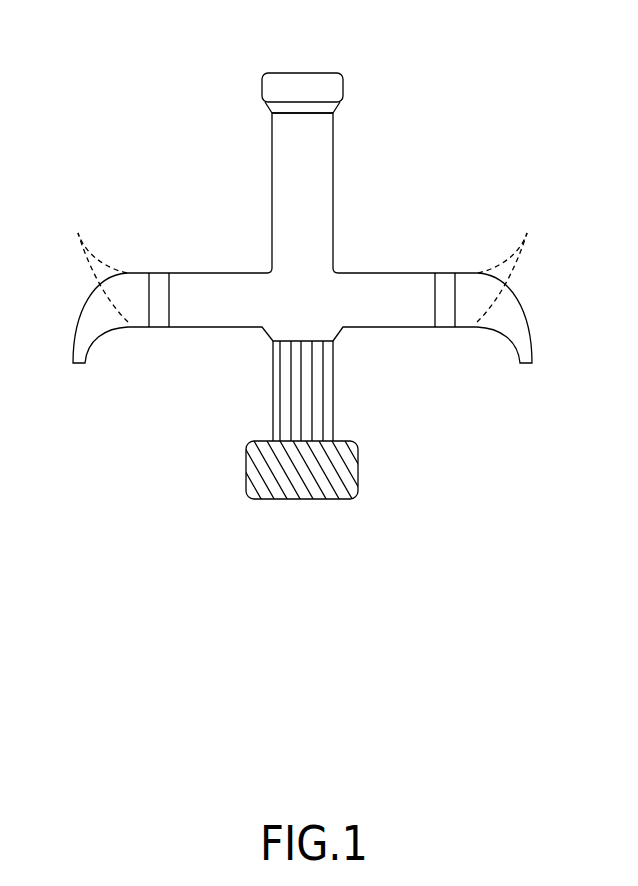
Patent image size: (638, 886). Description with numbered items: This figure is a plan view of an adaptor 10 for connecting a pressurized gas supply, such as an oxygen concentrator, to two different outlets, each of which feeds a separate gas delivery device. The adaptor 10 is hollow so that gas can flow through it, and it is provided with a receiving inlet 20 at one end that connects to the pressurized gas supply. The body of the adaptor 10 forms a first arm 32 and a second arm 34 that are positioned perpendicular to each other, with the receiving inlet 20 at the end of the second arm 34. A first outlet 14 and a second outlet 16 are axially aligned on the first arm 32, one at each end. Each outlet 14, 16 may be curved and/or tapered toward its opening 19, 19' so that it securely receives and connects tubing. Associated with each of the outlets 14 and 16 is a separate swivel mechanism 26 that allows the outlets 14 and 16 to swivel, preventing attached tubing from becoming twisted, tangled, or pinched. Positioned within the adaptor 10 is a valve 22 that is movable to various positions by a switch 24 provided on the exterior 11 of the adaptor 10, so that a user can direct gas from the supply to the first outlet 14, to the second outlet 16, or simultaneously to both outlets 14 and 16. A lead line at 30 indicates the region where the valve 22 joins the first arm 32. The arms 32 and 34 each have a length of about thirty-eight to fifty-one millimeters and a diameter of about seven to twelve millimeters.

The adaptor 10 is at (492, 122).
The exterior 11 is at (272, 197).
The first outlet 14 is at (87, 365).
The second outlet 16 is at (530, 325).
The opening 19 is at (56, 384).
The opening 19' is at (538, 389).
The receiving inlet 20 is at (330, 88).
The valve 22 is at (315, 341).
The switch 24 is at (343, 468).
The swivel mechanism 26 is at (152, 320).
The shoulder notch 30 is at (251, 335).
The first arm 32 is at (240, 270).
The second arm 34 is at (272, 142).